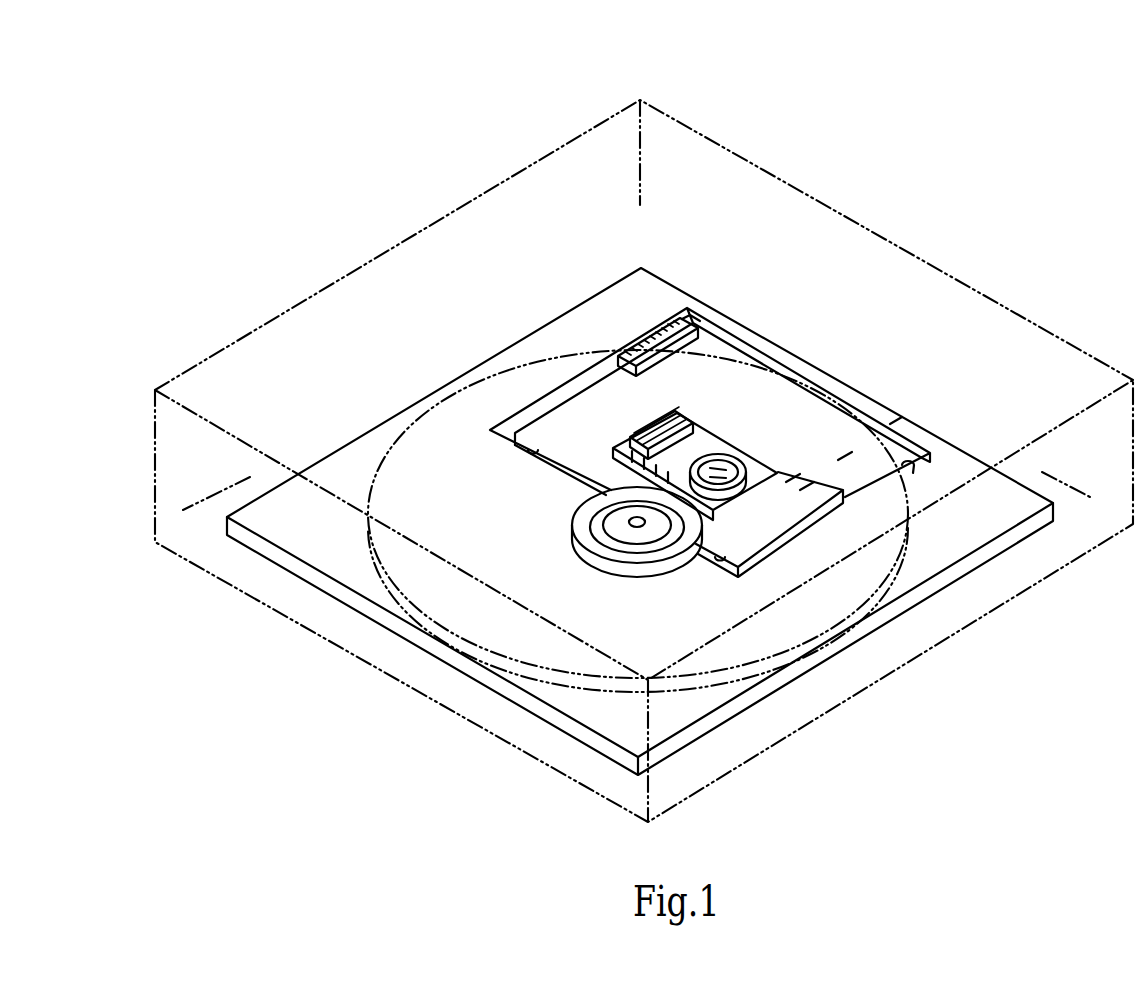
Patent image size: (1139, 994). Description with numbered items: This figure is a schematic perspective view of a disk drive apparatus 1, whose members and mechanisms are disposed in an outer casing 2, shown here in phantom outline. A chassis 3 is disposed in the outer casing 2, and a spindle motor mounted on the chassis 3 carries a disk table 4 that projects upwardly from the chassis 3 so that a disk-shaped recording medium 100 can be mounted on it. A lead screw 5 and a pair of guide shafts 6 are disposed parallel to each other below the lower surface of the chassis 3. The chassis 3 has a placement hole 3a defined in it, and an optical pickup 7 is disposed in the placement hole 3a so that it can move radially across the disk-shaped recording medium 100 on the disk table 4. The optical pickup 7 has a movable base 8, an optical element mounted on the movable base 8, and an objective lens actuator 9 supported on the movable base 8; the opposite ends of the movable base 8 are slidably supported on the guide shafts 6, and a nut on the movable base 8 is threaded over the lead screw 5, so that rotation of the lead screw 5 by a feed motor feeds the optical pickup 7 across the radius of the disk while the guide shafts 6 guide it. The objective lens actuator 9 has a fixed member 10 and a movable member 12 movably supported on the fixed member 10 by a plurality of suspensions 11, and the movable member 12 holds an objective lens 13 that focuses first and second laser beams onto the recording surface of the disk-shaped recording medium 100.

The disk drive apparatus 1 is at (1010, 156).
The outer casing 2 is at (369, 262).
The chassis 3 is at (900, 603).
The placement hole 3a is at (908, 465).
The disk table 4 is at (688, 565).
The lead screw 5 is at (650, 345).
The guide shafts 6 is at (704, 326).
The optical pickup 7 is at (850, 392).
The movable base 8 is at (845, 455).
The objective lens actuator 9 is at (748, 435).
The fixed member 10 is at (632, 433).
The suspensions 11 is at (633, 447).
The movable member 12 is at (793, 480).
The objective lens 13 is at (807, 487).
The disk-shaped recording medium 100 is at (437, 402).